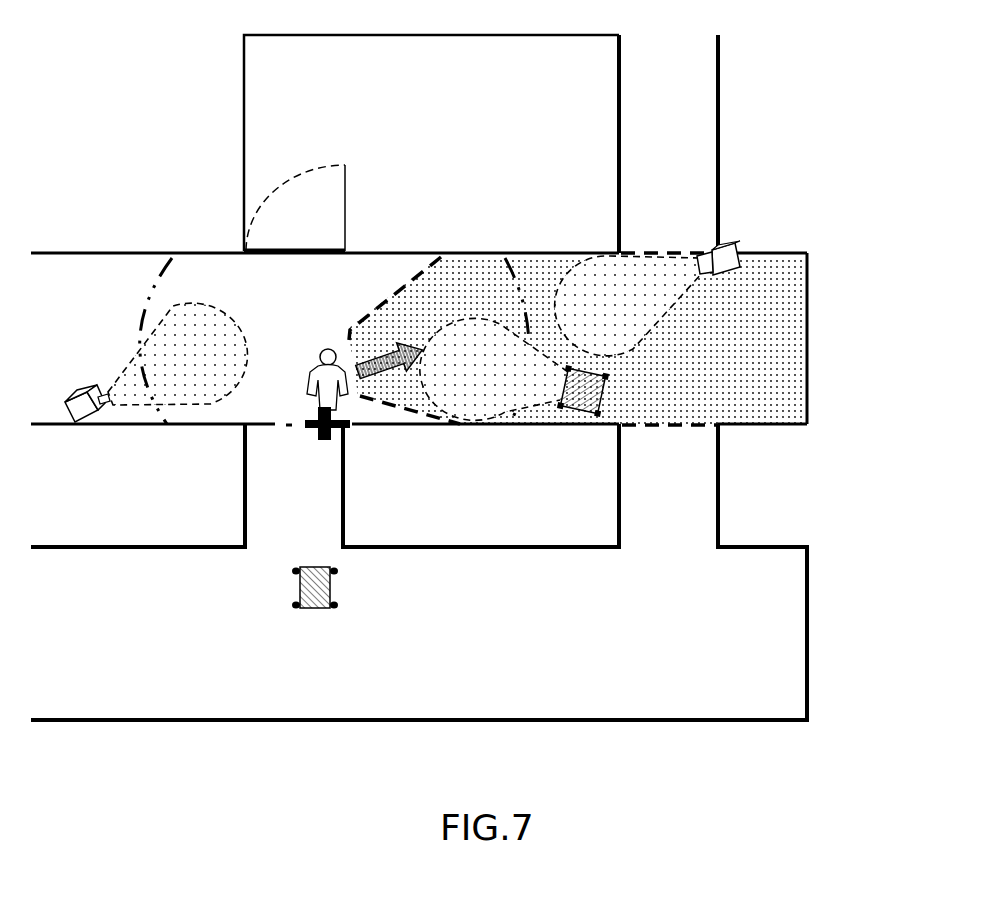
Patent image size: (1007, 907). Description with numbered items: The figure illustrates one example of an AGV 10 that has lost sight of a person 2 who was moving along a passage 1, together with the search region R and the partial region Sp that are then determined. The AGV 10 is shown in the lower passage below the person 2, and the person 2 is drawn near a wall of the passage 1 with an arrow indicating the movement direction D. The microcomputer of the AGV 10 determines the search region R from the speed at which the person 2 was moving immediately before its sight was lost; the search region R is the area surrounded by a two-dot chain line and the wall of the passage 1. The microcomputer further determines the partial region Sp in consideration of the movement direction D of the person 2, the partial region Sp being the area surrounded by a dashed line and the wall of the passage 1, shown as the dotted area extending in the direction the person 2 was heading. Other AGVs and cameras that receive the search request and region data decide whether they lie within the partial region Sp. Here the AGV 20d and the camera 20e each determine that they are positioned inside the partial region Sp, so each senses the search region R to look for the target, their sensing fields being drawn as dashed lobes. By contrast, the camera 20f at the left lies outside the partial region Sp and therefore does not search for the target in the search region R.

The passage 1 is at (187, 665).
The person 2 is at (345, 427).
The AGV 10 is at (312, 612).
The AGV 20d is at (600, 402).
The camera 20e is at (715, 250).
The camera 20f is at (95, 386).
The movement direction D is at (363, 328).
The search region R is at (237, 277).
The partial region Sp is at (760, 300).